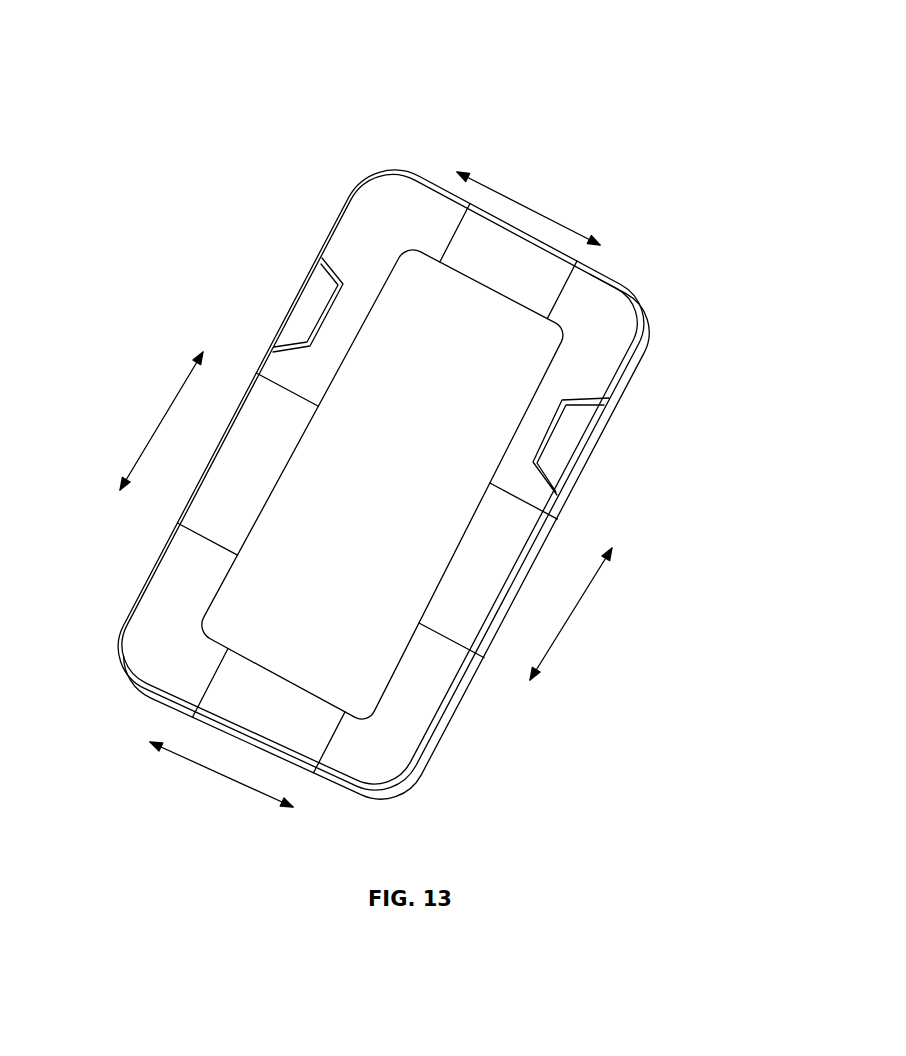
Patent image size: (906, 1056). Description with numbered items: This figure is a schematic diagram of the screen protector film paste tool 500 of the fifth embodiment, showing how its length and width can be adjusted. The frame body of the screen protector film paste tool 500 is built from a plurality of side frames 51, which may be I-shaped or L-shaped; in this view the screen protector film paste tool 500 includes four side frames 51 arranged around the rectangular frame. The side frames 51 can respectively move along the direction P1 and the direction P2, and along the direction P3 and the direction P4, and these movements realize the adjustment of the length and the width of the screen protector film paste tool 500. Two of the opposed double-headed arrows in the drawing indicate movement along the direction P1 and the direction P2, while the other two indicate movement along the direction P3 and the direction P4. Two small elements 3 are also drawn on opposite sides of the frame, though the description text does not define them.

The screen protector film paste tool 500 is at (387, 399).
The side frame 51 is at (374, 194).
The clip / latch 3 is at (305, 288).
The direction P1 is at (360, 461).
The direction P2 is at (459, 526).
The direction P3 is at (389, 508).
The direction P4 is at (333, 604).